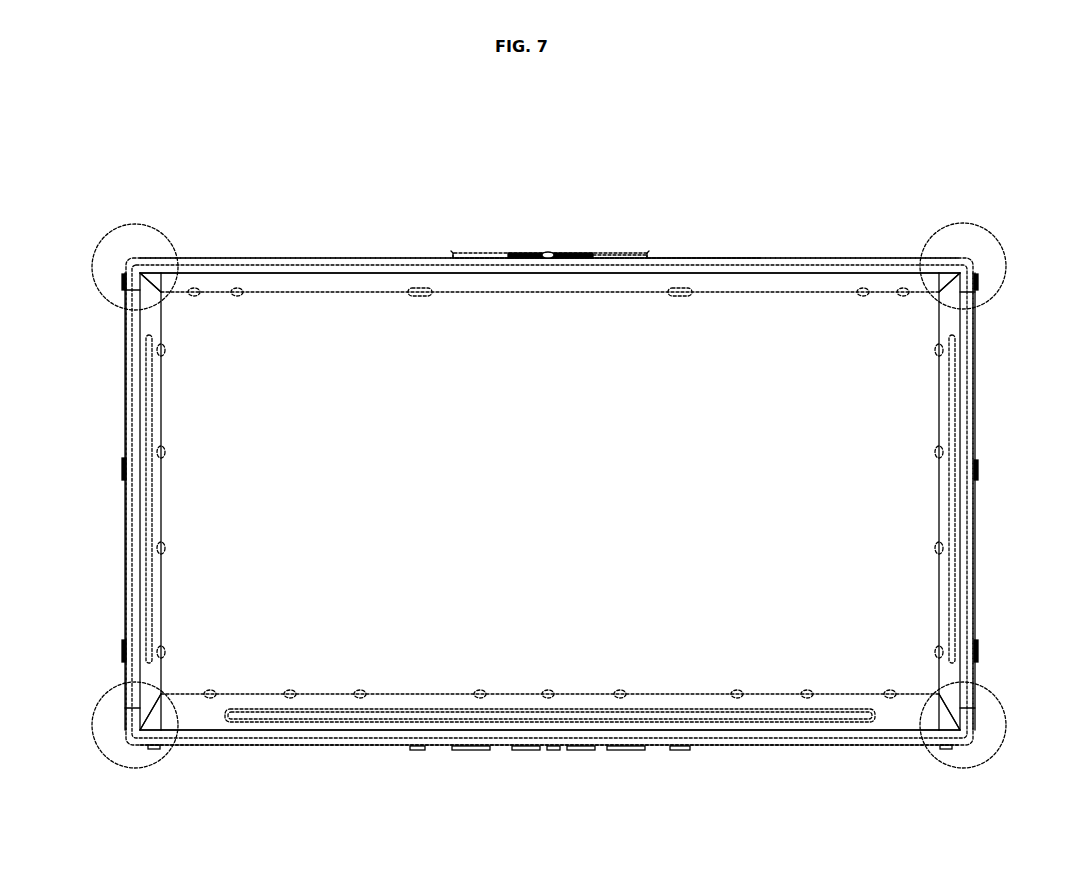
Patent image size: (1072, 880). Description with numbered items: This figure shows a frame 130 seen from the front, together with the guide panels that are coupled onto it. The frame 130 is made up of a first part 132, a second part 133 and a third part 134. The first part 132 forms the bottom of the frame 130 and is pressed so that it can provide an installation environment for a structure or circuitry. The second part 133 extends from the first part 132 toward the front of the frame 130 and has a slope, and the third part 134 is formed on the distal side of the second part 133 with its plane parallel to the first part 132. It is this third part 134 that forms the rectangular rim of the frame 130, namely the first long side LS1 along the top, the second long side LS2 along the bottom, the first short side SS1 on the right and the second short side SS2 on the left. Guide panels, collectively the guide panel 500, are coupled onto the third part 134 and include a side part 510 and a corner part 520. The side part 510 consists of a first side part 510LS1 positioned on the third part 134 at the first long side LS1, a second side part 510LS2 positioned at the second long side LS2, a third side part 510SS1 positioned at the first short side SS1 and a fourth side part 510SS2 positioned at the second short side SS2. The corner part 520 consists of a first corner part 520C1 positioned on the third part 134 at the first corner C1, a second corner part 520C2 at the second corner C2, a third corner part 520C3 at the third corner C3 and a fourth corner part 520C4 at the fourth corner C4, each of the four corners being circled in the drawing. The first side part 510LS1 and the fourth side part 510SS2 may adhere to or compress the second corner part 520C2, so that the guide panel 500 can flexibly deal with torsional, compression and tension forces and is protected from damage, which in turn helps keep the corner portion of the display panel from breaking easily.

The guide panel 500 is at (303, 803).
The side part 510 is at (523, 862).
The corner part 520 is at (663, 790).
The first side part 510LS1 is at (308, 265).
The second side part 510LS2 is at (800, 741).
The third side part 510SS1 is at (975, 560).
The fourth side part 510SS2 is at (126, 390).
The first long side LS1 is at (428, 248).
The second long side LS2 is at (455, 763).
The first short side SS1 is at (981, 472).
The second short side SS2 is at (119, 474).
The frame 130 is at (716, 187).
The first part 132 is at (588, 317).
The second part 133 is at (655, 280).
The third part 134 is at (689, 257).
The first corner C1 is at (994, 236).
The second corner C2 is at (105, 237).
The third corner C3 is at (105, 757).
The fourth corner C4 is at (993, 757).
The first corner part 520C1 is at (958, 273).
The second corner part 520C2 is at (143, 258).
The third corner part 520C3 is at (156, 749).
The fourth corner part 520C4 is at (949, 749).